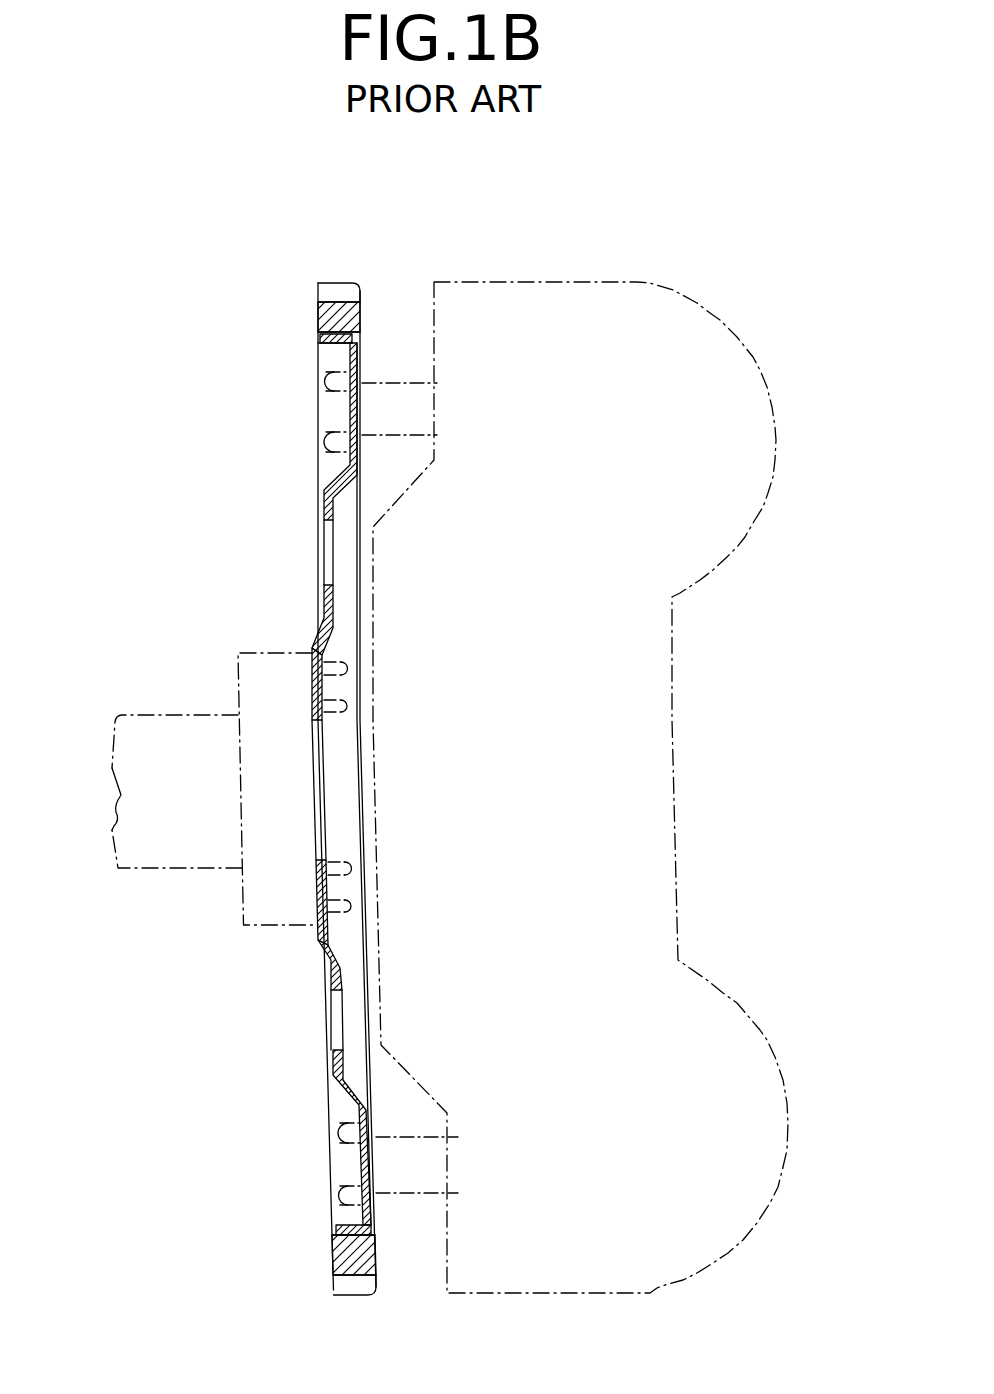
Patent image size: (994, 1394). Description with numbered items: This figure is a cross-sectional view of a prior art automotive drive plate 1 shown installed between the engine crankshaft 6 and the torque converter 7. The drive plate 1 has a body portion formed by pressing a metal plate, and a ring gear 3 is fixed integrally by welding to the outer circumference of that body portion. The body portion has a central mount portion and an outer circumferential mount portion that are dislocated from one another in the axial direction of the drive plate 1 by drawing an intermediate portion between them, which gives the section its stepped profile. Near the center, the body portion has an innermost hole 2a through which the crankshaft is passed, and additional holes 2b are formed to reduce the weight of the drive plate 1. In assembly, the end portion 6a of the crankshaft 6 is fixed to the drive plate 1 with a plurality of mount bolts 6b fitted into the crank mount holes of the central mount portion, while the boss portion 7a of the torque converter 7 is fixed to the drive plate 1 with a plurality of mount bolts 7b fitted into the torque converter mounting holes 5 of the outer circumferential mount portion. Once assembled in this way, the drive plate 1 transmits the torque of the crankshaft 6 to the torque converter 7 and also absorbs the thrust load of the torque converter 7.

The drive plate 1 is at (140, 268).
The innermost hole 2a is at (318, 781).
The additional holes 2b is at (330, 558).
The ring gear 3 is at (325, 294).
The torque converter mounting holes 5 is at (362, 398).
The crankshaft 6 is at (160, 700).
The end portion of the crankshaft 6a is at (252, 928).
The mount bolts 6b is at (346, 683).
The torque converter 7 is at (762, 351).
The boss portion of the torque converter 7a is at (428, 407).
The mount bolts 7b is at (318, 414).